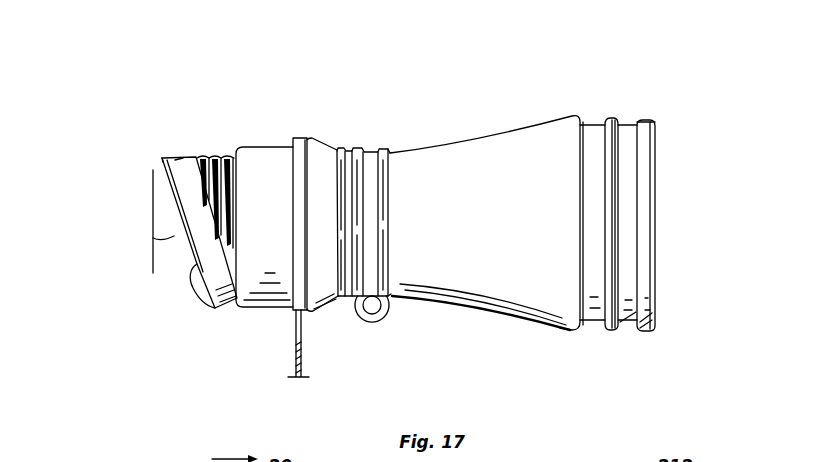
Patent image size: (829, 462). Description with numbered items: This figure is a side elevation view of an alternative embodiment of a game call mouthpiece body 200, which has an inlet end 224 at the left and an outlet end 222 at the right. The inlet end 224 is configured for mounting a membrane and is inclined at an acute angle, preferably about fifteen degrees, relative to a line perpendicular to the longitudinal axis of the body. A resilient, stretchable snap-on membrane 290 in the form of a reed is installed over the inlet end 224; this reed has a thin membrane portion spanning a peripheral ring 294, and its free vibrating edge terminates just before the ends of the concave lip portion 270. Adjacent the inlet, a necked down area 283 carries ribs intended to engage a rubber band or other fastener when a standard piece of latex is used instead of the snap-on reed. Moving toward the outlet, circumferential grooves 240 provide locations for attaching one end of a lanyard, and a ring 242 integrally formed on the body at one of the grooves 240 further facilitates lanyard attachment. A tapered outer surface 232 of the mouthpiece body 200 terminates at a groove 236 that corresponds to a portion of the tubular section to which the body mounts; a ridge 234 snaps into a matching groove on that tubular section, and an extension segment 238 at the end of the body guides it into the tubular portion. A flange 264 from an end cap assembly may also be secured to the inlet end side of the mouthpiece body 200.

The mouthpiece body 200 is at (592, 84).
The outlet end 222 is at (677, 109).
The inlet end 224 is at (156, 161).
The tapered outer surface 232 is at (455, 137).
The ridge 234 is at (623, 332).
The groove 236 is at (588, 328).
The extension segment 238 is at (652, 119).
The circumferential grooves 240 is at (347, 150).
The ring 242 is at (384, 312).
The flange 264 is at (303, 345).
The concave lip portion 270 is at (201, 287).
The necked down area 283 is at (216, 150).
The snap-on membrane 290 is at (174, 153).
The peripheral ring 294 is at (187, 183).